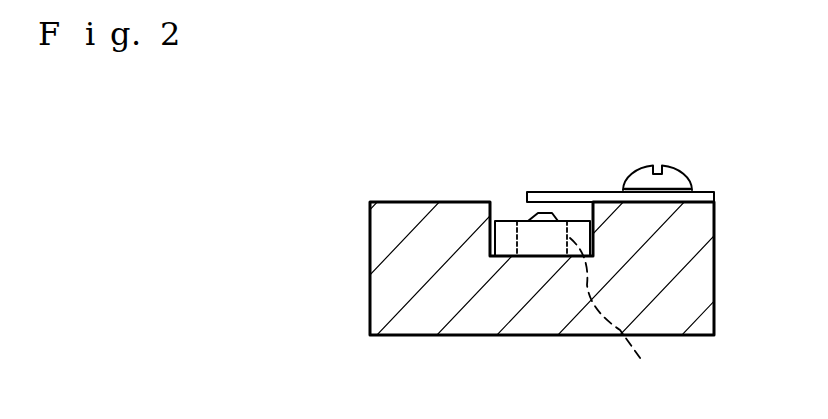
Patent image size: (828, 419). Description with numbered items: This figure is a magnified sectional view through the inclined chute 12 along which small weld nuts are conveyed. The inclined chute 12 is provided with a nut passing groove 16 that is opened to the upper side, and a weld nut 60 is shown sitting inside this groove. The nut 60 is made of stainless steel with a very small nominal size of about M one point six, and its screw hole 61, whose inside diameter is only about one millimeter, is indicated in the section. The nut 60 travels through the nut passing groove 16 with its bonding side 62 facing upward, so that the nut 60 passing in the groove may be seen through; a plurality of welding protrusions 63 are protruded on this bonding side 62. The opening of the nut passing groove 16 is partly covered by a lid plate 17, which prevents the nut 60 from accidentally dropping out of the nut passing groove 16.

The inclined chute 12 is at (370, 277).
The nut passing groove 16 is at (585, 209).
The lid plate 17 is at (600, 190).
The weld nut 60 is at (547, 238).
The screw hole 61 is at (630, 321).
The bonding side 62 is at (507, 219).
The welding protrusions 63 is at (543, 212).